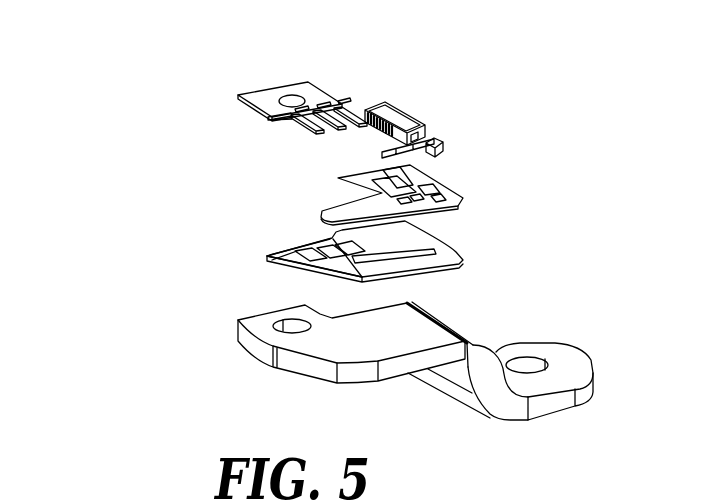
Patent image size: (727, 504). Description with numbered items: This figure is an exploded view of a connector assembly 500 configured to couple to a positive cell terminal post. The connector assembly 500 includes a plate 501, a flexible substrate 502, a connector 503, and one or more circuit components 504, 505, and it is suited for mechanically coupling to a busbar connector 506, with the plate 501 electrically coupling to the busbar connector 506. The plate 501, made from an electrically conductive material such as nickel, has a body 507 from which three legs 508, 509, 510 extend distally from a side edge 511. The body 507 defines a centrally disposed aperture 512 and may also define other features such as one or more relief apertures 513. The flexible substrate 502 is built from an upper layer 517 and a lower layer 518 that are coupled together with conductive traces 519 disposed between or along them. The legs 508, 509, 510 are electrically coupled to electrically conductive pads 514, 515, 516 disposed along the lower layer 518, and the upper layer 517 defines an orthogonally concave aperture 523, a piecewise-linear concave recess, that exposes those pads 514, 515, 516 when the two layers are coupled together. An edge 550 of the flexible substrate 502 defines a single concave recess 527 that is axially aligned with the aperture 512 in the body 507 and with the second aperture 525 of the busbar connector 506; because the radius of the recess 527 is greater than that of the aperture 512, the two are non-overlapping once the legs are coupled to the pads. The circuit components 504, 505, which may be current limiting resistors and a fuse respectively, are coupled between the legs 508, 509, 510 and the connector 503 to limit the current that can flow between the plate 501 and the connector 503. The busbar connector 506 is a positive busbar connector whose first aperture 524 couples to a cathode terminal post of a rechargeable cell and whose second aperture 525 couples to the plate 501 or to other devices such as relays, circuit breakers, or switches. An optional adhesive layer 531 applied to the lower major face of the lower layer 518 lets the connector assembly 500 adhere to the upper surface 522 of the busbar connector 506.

The connector assembly 500 is at (120, 174).
The plate 501 is at (250, 110).
The flexible substrate 502 is at (535, 190).
The connector 503 is at (392, 113).
The circuit components 504 is at (410, 137).
The circuit component 505 is at (437, 148).
The busbar connector 506 is at (570, 375).
The body 507 is at (267, 95).
The leg 508 is at (343, 101).
The leg 509 is at (329, 103).
The leg 510 is at (308, 107).
The side edge 511 is at (289, 116).
The aperture 512 is at (298, 96).
The relief apertures 513 is at (268, 117).
The electrically conductive pad 514 is at (266, 256).
The electrically conductive pad 515 is at (308, 268).
The electrically conductive pad 516 is at (350, 260).
The upper layer 517 is at (468, 198).
The lower layer 518 is at (469, 259).
The conductive traces 519 is at (370, 262).
The upper surface 522 is at (388, 336).
The orthogonally concave aperture 523 is at (357, 209).
The first aperture 524 is at (528, 354).
The second aperture 525 is at (273, 328).
The single concave recess 527 is at (290, 253).
The adhesive layer 531 is at (436, 273).
The edge 550 is at (333, 246).